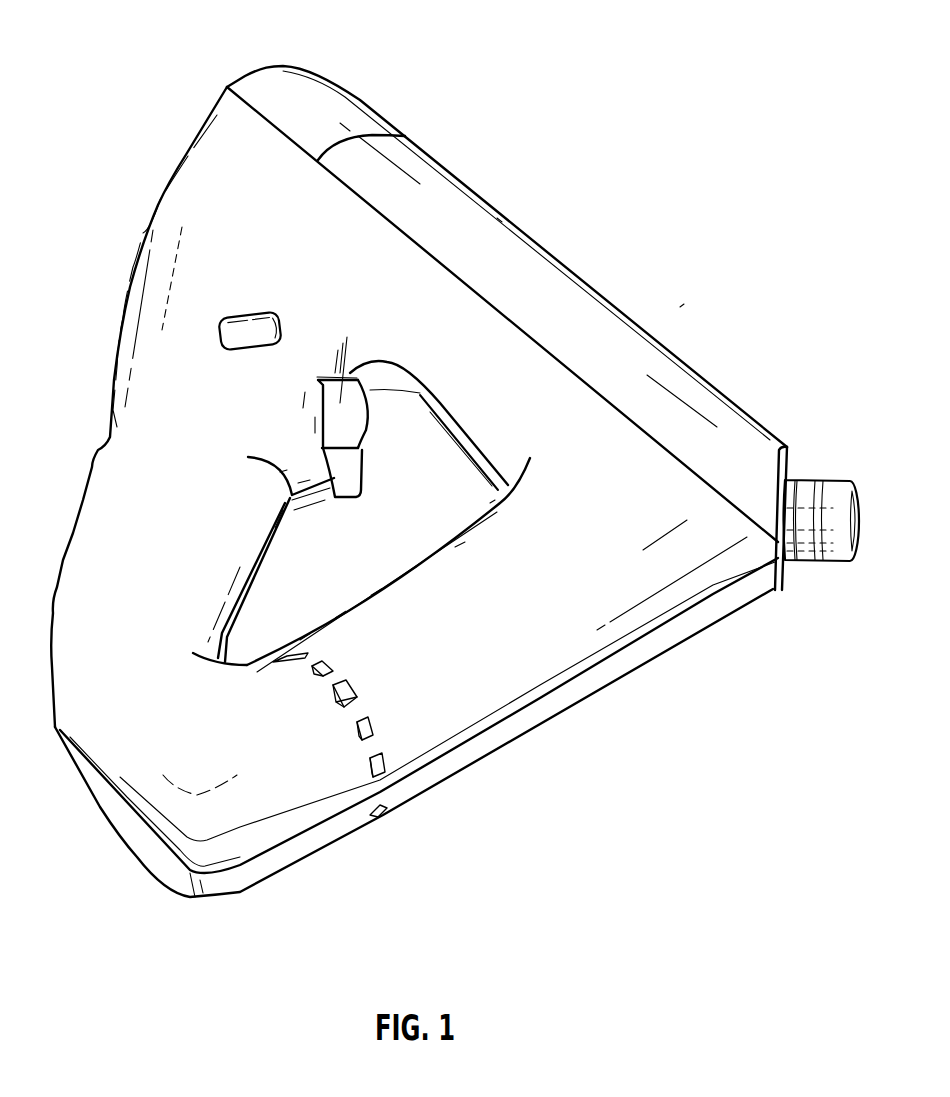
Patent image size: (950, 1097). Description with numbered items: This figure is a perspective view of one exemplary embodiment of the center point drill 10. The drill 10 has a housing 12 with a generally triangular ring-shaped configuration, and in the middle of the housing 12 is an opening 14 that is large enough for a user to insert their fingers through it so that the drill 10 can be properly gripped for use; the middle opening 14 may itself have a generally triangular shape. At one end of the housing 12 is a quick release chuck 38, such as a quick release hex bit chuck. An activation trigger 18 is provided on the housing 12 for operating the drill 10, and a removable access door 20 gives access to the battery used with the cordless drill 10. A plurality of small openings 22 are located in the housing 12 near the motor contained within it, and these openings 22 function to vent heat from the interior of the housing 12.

The center point drill 10 is at (576, 64).
The housing 12 is at (697, 400).
The opening 14 is at (413, 630).
The activation trigger 18 is at (347, 377).
The removable access door 20 is at (320, 110).
The small openings 22 is at (340, 700).
The quick release chuck 38 is at (837, 490).